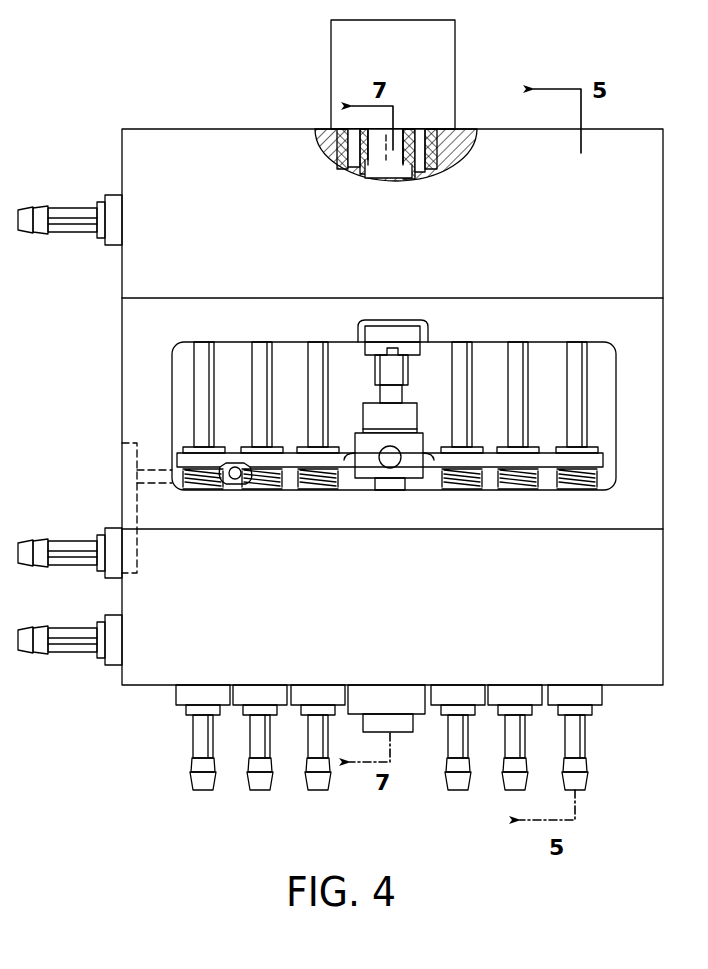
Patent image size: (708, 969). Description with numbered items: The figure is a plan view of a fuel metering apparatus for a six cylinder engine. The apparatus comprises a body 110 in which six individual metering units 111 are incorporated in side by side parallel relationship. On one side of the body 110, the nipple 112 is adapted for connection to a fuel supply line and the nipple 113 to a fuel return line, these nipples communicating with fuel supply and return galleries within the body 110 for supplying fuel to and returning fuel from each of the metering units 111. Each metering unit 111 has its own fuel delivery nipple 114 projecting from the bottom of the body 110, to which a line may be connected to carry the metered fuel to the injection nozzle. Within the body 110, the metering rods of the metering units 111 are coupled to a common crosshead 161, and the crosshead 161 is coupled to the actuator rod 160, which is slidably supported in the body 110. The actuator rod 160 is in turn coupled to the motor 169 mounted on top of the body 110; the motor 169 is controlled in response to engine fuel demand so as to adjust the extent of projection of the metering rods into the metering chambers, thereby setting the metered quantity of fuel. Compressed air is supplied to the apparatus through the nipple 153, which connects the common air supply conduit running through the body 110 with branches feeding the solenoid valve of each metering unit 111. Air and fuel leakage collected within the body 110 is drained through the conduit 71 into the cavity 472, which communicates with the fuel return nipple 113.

The body 110 is at (627, 192).
The motor 169 is at (441, 65).
The actuator rod 160 is at (398, 148).
The crosshead 161 is at (608, 452).
The metering units 111 is at (204, 348).
The conduit 71 is at (142, 466).
The cavity 472 is at (127, 508).
The nipple 153 is at (74, 214).
The nipple 113 is at (38, 540).
The nipple 112 is at (58, 638).
The fuel delivery nipple 114 is at (199, 733).